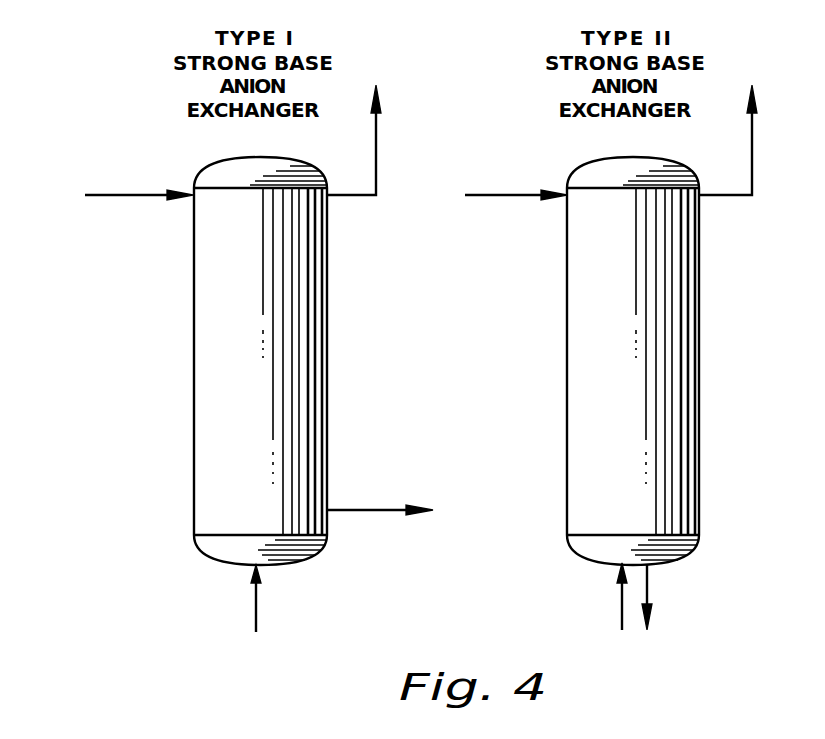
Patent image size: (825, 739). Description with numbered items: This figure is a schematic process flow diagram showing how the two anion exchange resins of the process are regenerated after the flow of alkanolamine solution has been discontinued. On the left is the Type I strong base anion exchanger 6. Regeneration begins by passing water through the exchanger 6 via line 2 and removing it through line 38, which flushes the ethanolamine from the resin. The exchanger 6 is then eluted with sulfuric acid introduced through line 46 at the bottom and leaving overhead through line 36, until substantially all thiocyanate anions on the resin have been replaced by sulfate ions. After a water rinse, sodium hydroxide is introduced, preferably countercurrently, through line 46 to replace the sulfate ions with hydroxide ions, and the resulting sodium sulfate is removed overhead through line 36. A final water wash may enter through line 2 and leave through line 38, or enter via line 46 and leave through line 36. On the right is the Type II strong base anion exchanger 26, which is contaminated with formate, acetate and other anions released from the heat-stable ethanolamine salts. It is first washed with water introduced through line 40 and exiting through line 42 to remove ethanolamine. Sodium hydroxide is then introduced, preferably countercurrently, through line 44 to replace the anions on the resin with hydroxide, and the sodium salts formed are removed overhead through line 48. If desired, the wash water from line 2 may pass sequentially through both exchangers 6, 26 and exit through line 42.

The line 2 is at (134, 197).
The Type I strong base anion exchanger 6 is at (251, 515).
The line 36 is at (376, 170).
The line 38 is at (376, 505).
The line 46 is at (258, 622).
The Type II strong base anion exchanger 26 is at (613, 514).
The line 40 is at (516, 198).
The line 48 is at (742, 198).
The line 44 is at (618, 602).
The line 42 is at (650, 598).